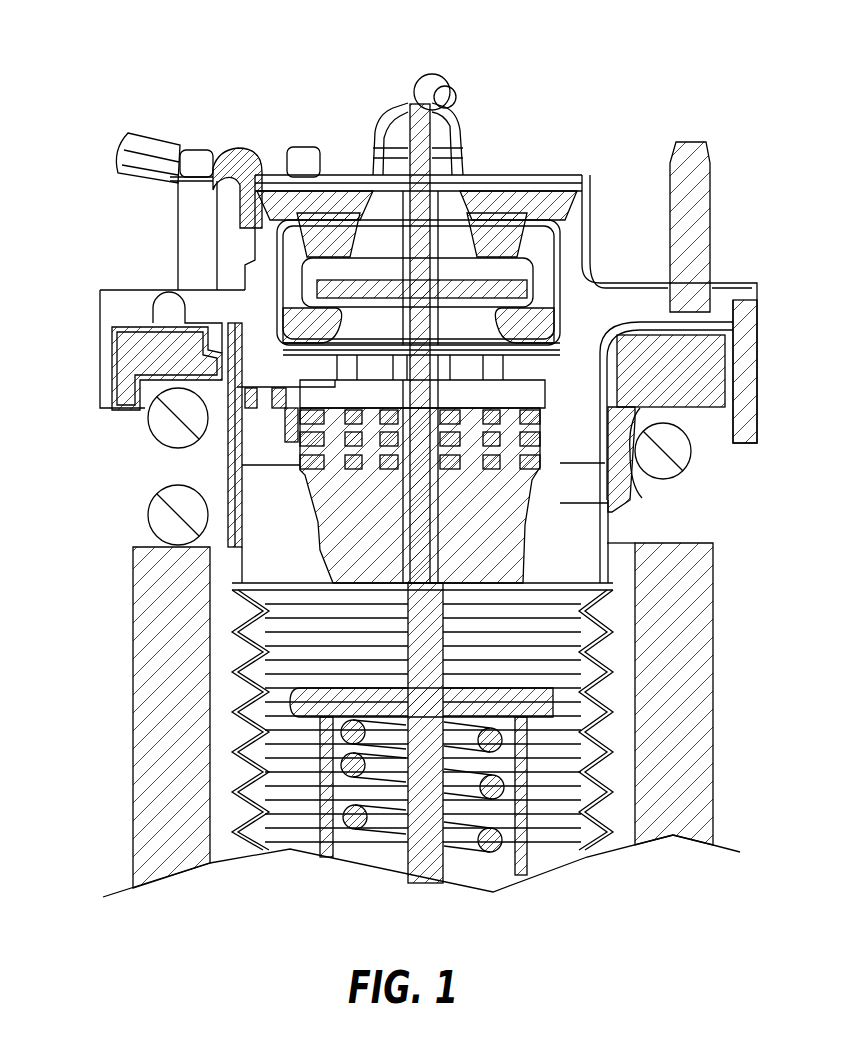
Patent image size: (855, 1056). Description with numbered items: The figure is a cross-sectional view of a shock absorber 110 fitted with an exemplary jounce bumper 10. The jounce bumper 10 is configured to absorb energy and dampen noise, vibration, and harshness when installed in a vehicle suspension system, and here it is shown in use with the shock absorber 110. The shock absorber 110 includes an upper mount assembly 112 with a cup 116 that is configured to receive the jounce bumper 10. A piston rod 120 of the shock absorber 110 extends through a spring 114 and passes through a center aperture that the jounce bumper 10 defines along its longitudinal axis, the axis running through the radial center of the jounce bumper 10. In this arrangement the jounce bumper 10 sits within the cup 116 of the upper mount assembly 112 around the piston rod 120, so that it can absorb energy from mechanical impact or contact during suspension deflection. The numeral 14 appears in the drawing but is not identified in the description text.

The jounce bumper 10 is at (610, 512).
The bellows 14 is at (270, 585).
The shock absorber 110 is at (177, 70).
The upper mount assembly 112 is at (467, 247).
The spring 114 is at (180, 512).
The cup 116 is at (298, 421).
The piston rod 120 is at (410, 848).